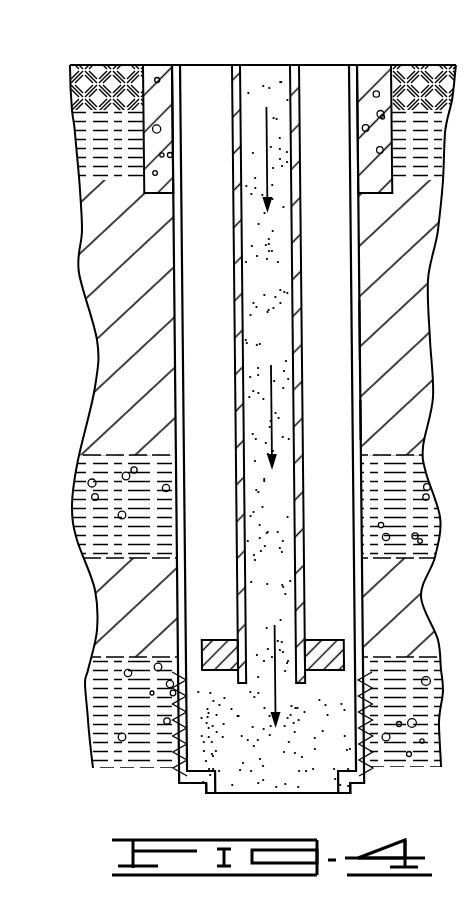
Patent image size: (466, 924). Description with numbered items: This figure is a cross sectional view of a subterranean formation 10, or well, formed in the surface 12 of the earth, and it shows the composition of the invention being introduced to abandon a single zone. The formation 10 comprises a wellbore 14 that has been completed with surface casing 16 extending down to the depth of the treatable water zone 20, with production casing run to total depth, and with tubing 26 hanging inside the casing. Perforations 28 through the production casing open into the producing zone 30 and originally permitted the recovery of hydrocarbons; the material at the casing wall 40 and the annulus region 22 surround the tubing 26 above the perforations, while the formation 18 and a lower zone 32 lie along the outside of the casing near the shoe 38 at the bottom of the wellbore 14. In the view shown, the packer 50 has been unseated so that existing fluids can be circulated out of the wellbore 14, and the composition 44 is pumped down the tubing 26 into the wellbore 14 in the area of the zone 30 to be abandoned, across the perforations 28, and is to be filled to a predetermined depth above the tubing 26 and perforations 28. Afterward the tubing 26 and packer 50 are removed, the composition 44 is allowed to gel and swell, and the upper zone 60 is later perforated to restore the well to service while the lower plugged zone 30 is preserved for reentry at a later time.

The subterranean formation 10 is at (172, 60).
The surface of the earth 12 is at (418, 62).
The wellbore 14 is at (188, 100).
The surface casing 16 is at (150, 183).
The formation 18 is at (408, 391).
The treatable water zone 20 is at (102, 401).
The annulus 22 is at (368, 425).
The tubing 26 is at (300, 103).
The perforations 28 is at (176, 707).
The producing zone 30 is at (88, 718).
The lower zone 32 is at (408, 712).
The casing shoe 38 is at (250, 793).
The casing wall 40 is at (350, 330).
The composition 44 is at (262, 78).
The packer 50 is at (220, 640).
The zone 60 is at (433, 479).